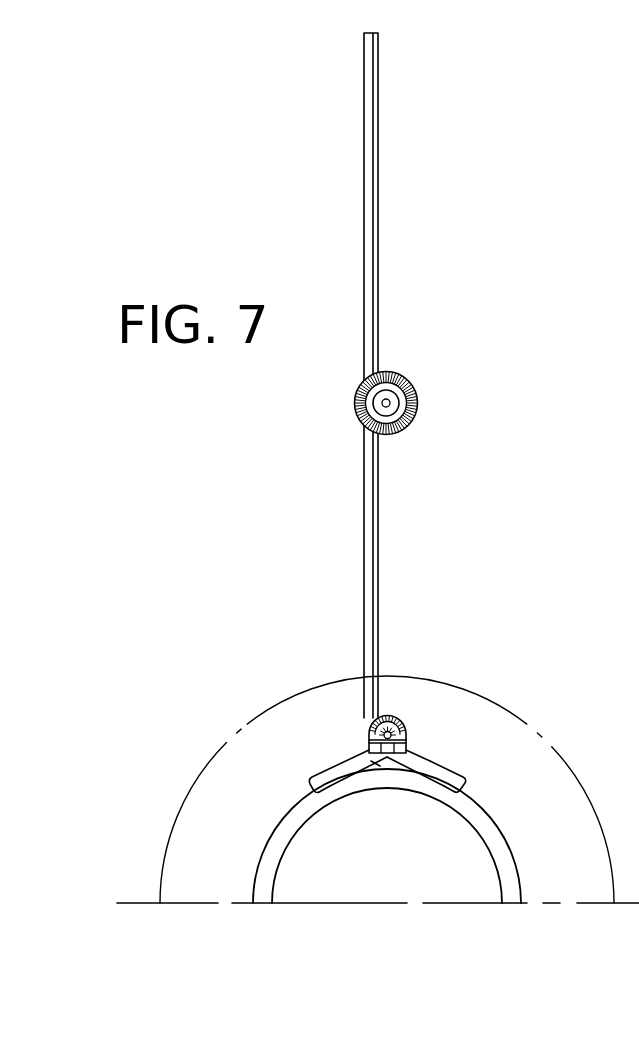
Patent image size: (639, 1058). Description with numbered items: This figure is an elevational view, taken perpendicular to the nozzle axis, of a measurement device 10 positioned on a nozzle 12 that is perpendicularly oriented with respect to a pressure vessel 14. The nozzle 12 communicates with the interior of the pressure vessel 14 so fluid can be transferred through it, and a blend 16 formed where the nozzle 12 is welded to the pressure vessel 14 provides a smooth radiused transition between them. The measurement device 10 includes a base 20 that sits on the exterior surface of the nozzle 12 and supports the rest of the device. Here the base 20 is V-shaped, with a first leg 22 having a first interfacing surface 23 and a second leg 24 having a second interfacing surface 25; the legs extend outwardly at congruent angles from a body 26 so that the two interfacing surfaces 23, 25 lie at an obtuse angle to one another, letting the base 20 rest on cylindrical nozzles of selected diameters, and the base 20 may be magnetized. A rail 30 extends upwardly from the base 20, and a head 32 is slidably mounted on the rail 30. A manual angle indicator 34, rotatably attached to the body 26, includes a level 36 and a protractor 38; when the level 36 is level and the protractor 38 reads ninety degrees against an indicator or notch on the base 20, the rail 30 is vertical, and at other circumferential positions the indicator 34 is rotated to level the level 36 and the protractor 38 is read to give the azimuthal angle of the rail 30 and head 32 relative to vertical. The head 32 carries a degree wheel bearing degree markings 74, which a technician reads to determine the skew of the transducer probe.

The measurement device 10 is at (302, 233).
The nozzle 12 is at (273, 850).
The pressure vessel 14 is at (200, 562).
The blend 16 is at (217, 792).
The base 20 is at (343, 738).
The first leg 22 is at (327, 763).
The first interfacing surface 23 is at (332, 780).
The second leg 24 is at (452, 773).
The second interfacing surface 25 is at (438, 780).
The body 26 is at (394, 716).
The rail 30 is at (364, 545).
The head 32 is at (353, 405).
The manual angle indicator 34 is at (410, 732).
The level 36 is at (406, 744).
The protractor 38 is at (410, 733).
The degree markings 74 is at (416, 402).